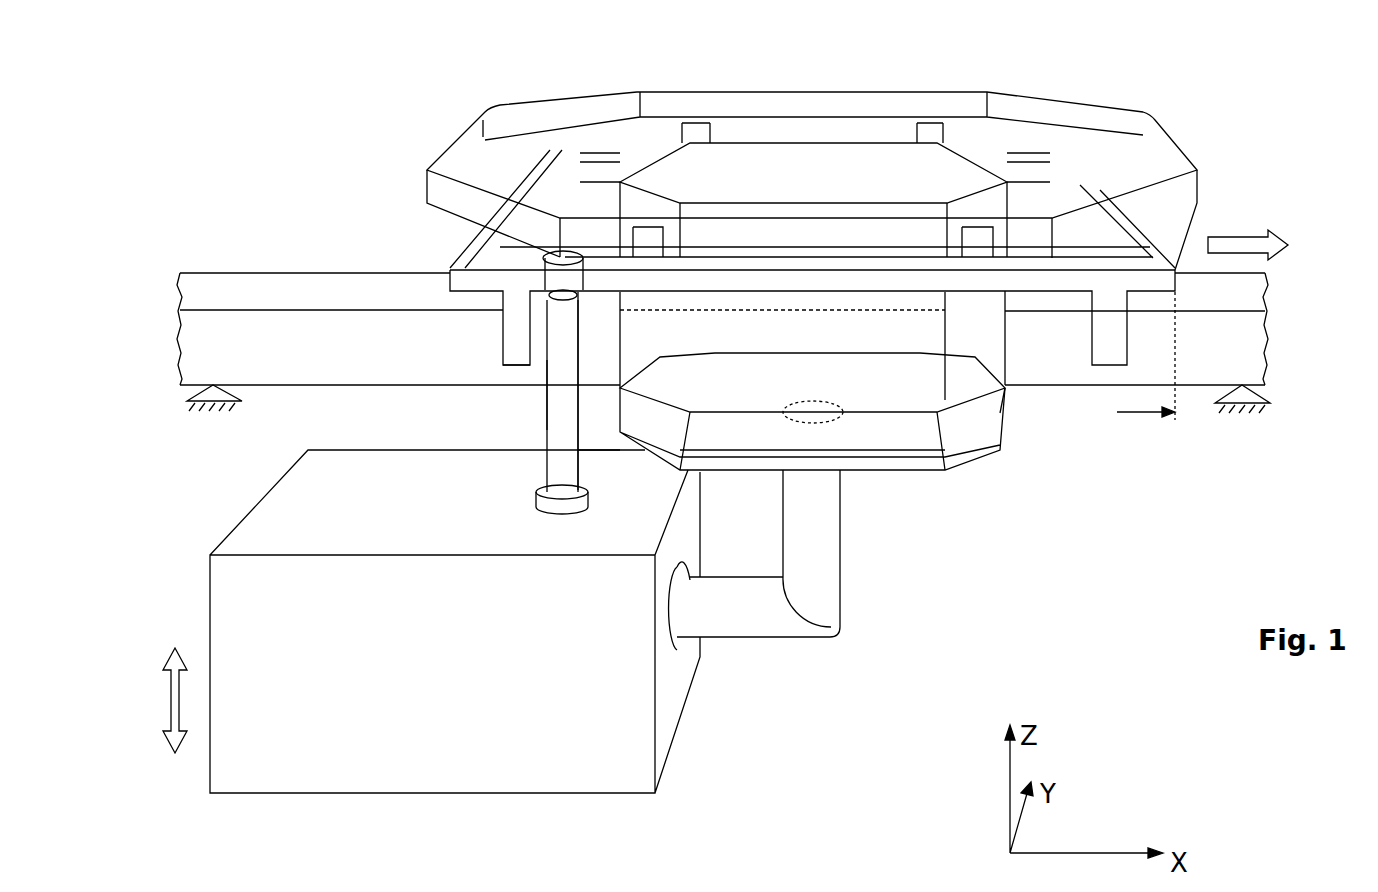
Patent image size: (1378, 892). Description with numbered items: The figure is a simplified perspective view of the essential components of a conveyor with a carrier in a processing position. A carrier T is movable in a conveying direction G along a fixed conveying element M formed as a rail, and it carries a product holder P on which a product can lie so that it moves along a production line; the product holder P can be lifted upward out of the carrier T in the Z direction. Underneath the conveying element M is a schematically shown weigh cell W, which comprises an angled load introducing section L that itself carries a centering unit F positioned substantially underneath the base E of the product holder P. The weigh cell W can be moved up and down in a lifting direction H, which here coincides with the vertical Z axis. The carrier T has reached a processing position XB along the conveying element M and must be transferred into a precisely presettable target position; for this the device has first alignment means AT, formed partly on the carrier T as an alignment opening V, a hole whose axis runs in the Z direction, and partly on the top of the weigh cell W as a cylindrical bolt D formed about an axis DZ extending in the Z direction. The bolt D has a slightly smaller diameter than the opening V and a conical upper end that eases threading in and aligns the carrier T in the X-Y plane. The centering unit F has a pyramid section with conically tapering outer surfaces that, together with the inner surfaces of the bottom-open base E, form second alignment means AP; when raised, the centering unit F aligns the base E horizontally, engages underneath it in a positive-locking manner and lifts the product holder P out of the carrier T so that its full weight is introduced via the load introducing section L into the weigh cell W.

The product holder P is at (1040, 133).
The alignment opening V is at (577, 270).
The conveying direction G is at (1277, 235).
The conveying element M is at (270, 290).
The carrier T is at (490, 229).
The first alignment means AT is at (538, 294).
The base of the product holder E is at (656, 352).
The axis of the bolt DZ is at (558, 412).
The bolt D is at (553, 443).
The processing position XB is at (1146, 379).
The second alignment means AP is at (1010, 404).
The centering unit F is at (890, 430).
The weigh cell W is at (510, 637).
The load introducing section L is at (825, 590).
The lifting direction H is at (176, 717).